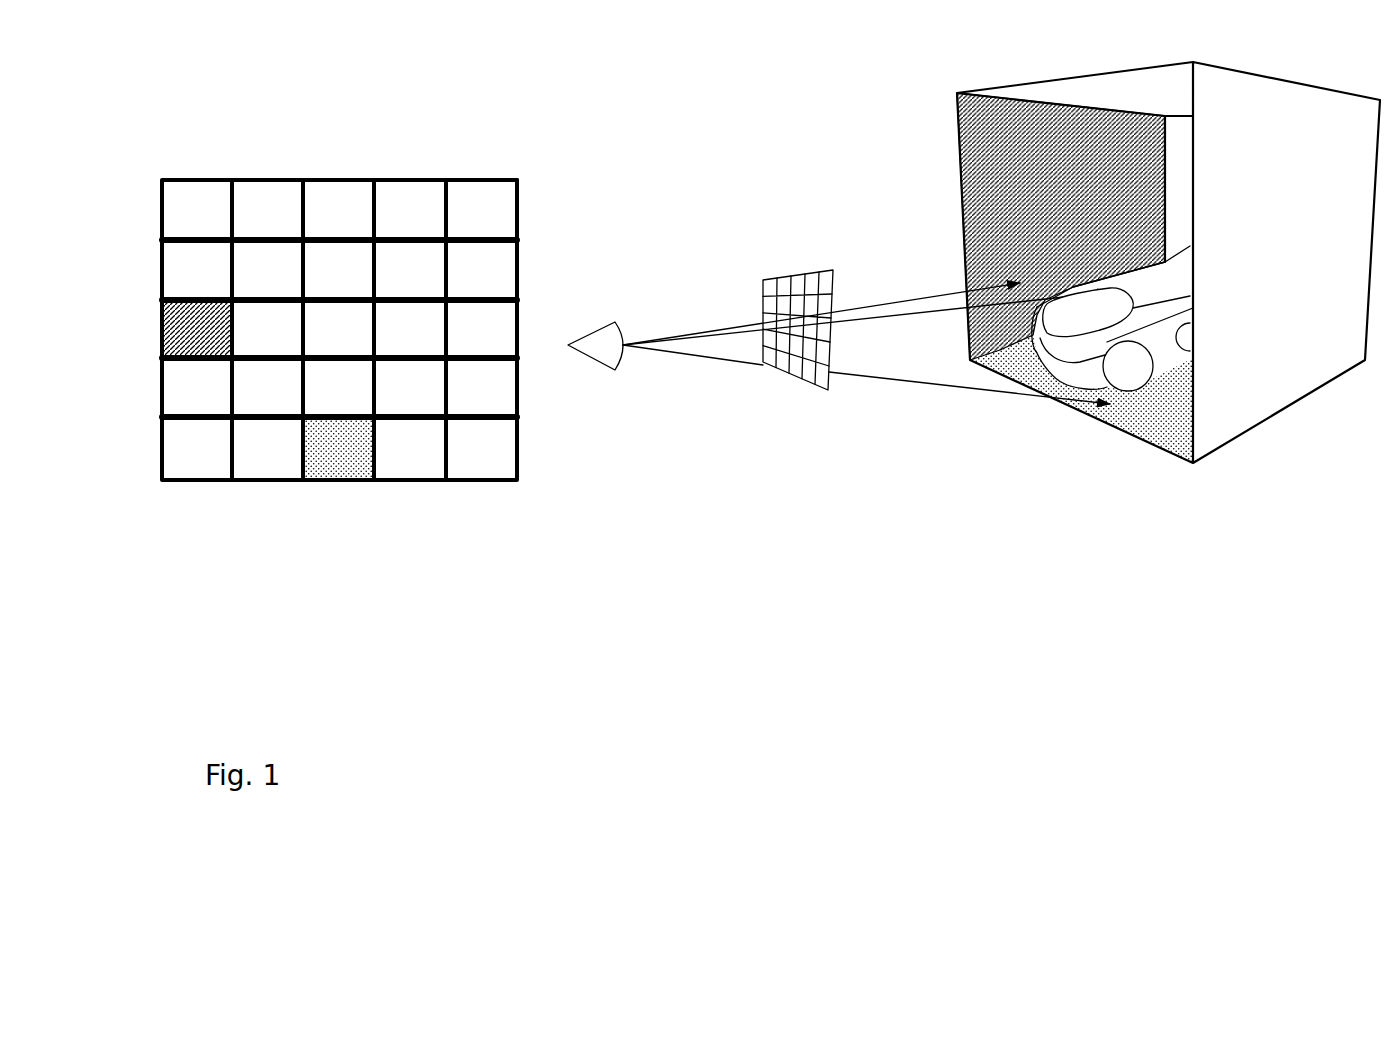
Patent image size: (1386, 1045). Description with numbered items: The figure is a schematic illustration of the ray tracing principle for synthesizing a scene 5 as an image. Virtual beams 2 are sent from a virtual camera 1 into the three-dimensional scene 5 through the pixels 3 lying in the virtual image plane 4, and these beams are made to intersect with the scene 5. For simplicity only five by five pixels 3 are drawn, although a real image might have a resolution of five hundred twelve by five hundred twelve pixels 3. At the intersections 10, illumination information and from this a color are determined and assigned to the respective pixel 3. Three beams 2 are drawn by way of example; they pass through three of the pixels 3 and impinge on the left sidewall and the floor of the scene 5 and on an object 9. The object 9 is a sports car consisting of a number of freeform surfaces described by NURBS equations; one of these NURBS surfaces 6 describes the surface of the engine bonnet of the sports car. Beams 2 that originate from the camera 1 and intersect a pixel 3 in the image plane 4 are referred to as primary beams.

The virtual camera 1 is at (587, 316).
The virtual beams 2 is at (684, 356).
The pixels 3 is at (402, 190).
The virtual image plane 4 is at (788, 268).
The scene 5 is at (1125, 482).
The NURBS surface 6 is at (1077, 297).
The object 9 is at (1167, 340).
The intersections 10 is at (1133, 295).